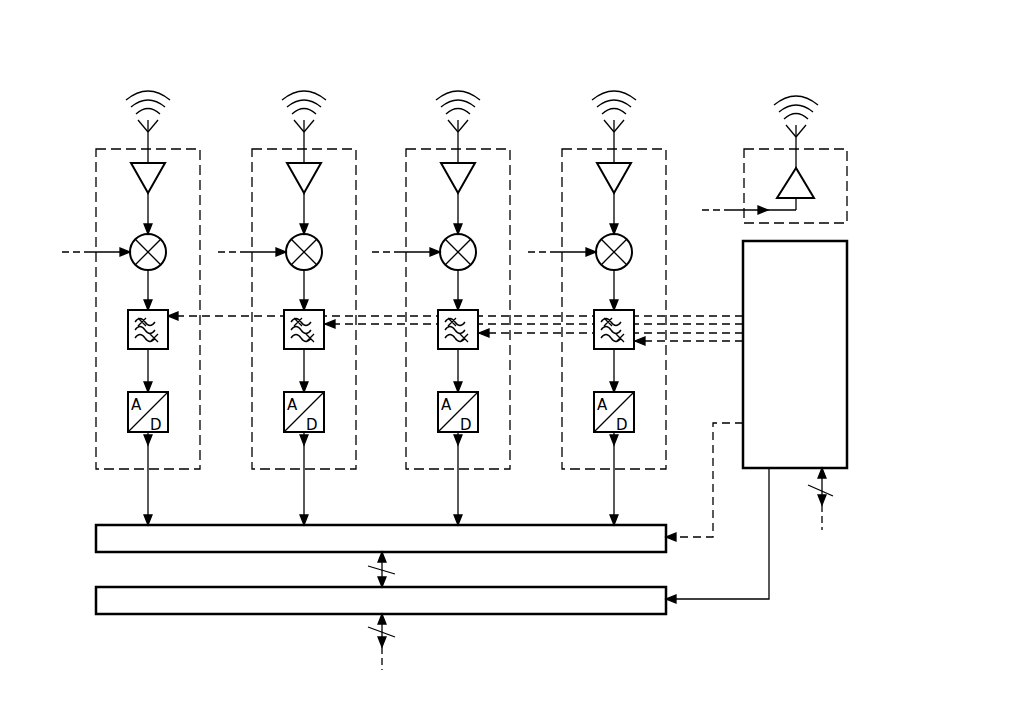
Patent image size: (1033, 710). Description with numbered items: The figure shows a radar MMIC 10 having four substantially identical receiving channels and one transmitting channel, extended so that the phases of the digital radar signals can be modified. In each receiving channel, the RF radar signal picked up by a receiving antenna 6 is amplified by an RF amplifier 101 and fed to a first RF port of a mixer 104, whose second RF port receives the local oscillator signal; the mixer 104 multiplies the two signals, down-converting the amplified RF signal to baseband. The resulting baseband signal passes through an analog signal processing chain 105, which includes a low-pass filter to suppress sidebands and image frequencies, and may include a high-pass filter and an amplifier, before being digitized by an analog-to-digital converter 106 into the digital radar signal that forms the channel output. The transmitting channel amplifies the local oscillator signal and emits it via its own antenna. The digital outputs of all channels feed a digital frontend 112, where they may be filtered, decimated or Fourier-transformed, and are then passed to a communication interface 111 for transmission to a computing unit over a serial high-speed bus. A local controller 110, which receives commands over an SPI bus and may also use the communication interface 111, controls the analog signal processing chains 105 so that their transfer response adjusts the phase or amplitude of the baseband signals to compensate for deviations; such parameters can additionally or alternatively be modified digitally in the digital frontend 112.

The MMIC 10 is at (250, 40).
The receiving antenna 6 is at (138, 132).
The RF amplifier 101 is at (163, 176).
The mixer 104 is at (165, 262).
The analog signal processing chain 105 is at (168, 348).
The analog-to-digital converter 106 is at (168, 432).
The local controller 110 is at (795, 354).
The communication interface 111 is at (381, 600).
The digital frontend 112 is at (381, 538).